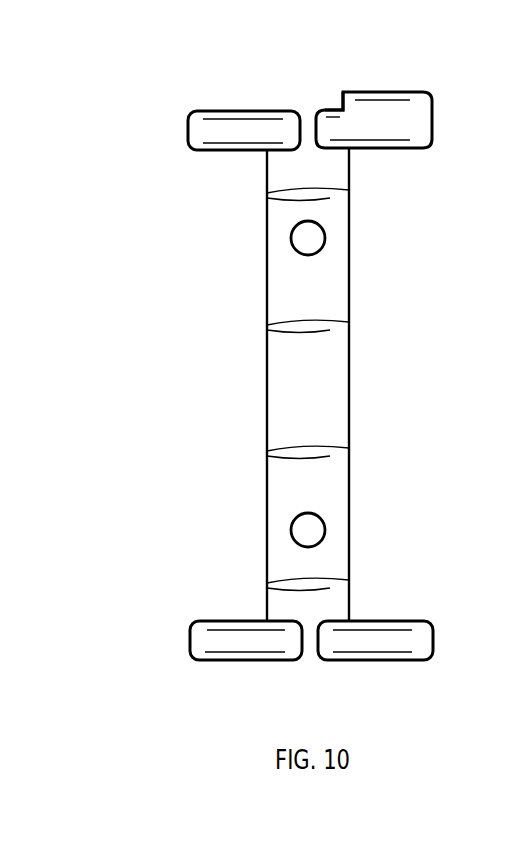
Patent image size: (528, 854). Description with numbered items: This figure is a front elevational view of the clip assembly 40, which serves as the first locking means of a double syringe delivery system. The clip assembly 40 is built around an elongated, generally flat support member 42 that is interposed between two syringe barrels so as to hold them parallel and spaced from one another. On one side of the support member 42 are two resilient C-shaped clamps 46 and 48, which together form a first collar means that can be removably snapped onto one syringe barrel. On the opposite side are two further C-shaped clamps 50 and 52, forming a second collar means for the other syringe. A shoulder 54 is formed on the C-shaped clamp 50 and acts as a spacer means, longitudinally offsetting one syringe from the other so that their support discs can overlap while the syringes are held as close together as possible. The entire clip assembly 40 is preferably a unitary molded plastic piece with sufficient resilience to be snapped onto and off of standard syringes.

The clip assembly 40 is at (243, 372).
The support member 42 is at (320, 370).
The C-shaped clamp 46 is at (230, 140).
The C-shaped clamp 48 is at (233, 638).
The C-shaped clamp 50 is at (415, 122).
The C-shaped clamp 52 is at (397, 632).
The shoulder 54 is at (340, 102).